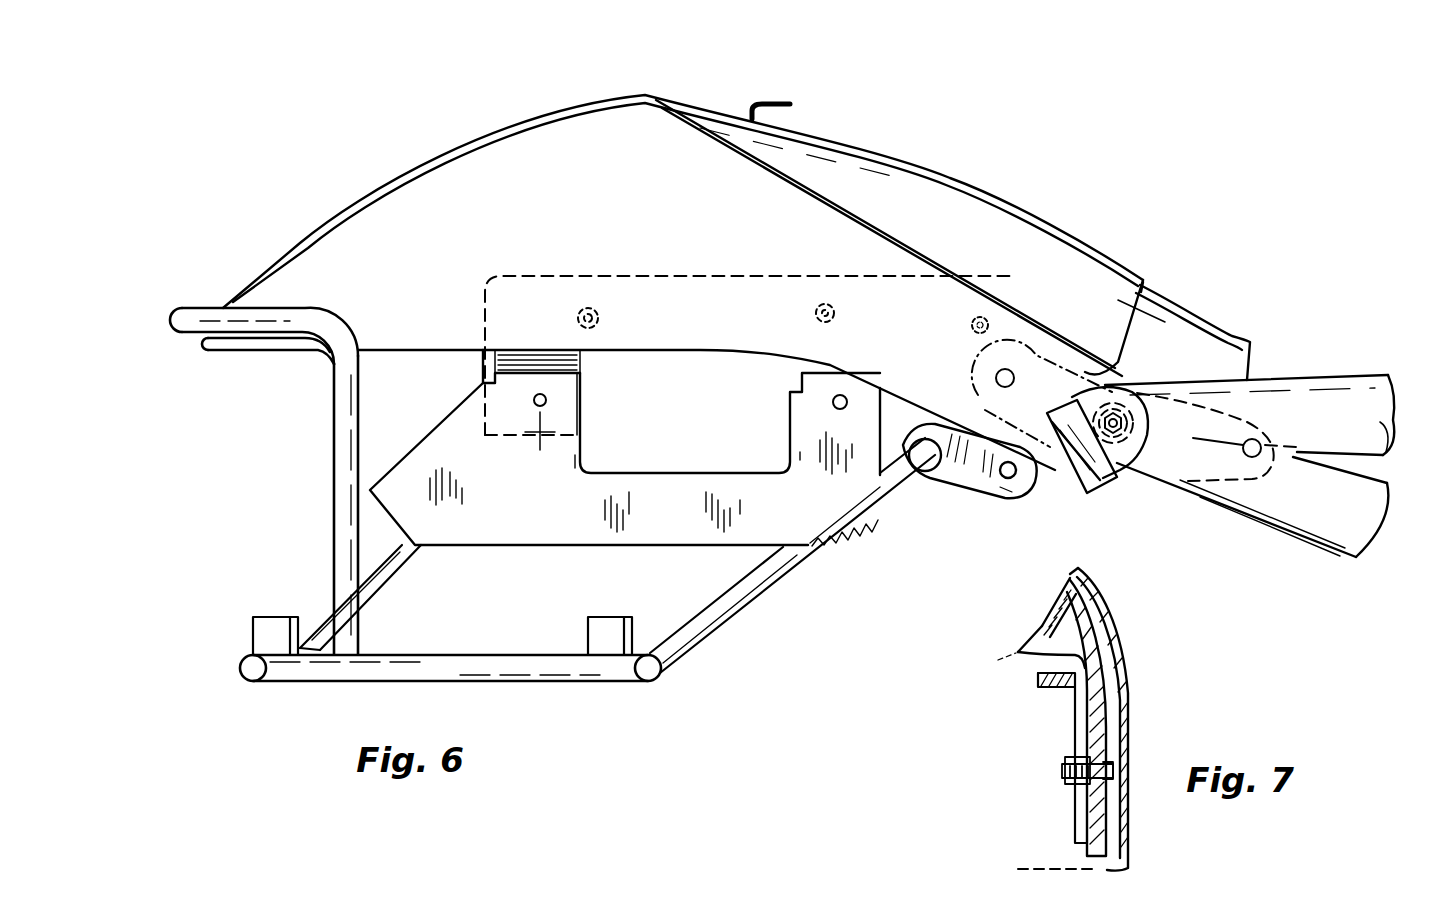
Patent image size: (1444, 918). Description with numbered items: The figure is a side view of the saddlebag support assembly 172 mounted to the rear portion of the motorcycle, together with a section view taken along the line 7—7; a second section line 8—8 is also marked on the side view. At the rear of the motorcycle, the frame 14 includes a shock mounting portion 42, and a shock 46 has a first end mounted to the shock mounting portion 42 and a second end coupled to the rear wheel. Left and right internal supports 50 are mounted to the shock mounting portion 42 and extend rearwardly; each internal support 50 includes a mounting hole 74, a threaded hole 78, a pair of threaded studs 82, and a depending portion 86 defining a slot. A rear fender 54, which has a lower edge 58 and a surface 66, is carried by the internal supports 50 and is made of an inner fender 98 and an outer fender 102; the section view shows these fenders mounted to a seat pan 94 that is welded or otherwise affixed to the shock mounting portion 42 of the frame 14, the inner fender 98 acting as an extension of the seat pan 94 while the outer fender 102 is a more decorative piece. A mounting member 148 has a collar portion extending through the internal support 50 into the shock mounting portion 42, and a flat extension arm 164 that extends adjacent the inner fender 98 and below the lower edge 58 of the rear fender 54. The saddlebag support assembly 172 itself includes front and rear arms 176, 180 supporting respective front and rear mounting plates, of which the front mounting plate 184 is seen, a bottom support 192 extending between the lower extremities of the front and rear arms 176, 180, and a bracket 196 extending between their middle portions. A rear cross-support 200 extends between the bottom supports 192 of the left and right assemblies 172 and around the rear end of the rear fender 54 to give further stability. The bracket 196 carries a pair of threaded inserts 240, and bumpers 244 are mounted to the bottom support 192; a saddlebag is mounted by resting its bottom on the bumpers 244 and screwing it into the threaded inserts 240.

In FIG. 6, the frame 14 is at (1380, 383).
In FIG. 6, the shock mounting portion 42 is at (1192, 470).
In FIG. 6, the shock 46 is at (1110, 482).
In FIG. 6, the internal support 50 is at (647, 275).
In FIG. 7, the internal support 50 is at (1073, 710).
In FIG. 6, the rear fender 54 is at (492, 140).
In FIG. 7, the rear fender 54 is at (1178, 640).
In FIG. 6, the lower edge 58 is at (228, 352).
In FIG. 6, the canopy edge 66 is at (700, 199).
In FIG. 6, the mounting hole 74 is at (1256, 437).
In FIG. 6, the threaded hole 78 is at (970, 325).
In FIG. 6, the threaded studs 82 is at (826, 303).
In FIG. 6, the depending portion 86 is at (575, 364).
In FIG. 7, the seat pan 94 is at (998, 660).
In FIG. 7, the inner fender 98 is at (1104, 738).
In FIG. 7, the outer fender 102 is at (1123, 683).
In FIG. 6, the mounting member 148 is at (1048, 362).
In FIG. 6, the extension arm 164 is at (1052, 494).
In FIG. 6, the saddlebag support assembly 172 is at (282, 500).
In FIG. 6, the front arm 176 is at (738, 600).
In FIG. 6, the rear arm 180 is at (382, 560).
In FIG. 6, the front mounting plate 184 is at (967, 492).
In FIG. 6, the bottom support 192 is at (478, 676).
In FIG. 6, the bracket 196 is at (607, 540).
In FIG. 6, the rear cross-support 200 is at (333, 437).
In FIG. 6, the threaded inserts 240 is at (548, 400).
In FIG. 6, the bumpers 244 is at (270, 618).
In FIG. 6, the section line 7- 7 is at (985, 262).
In FIG. 6, the section line 8- 8 is at (385, 306).